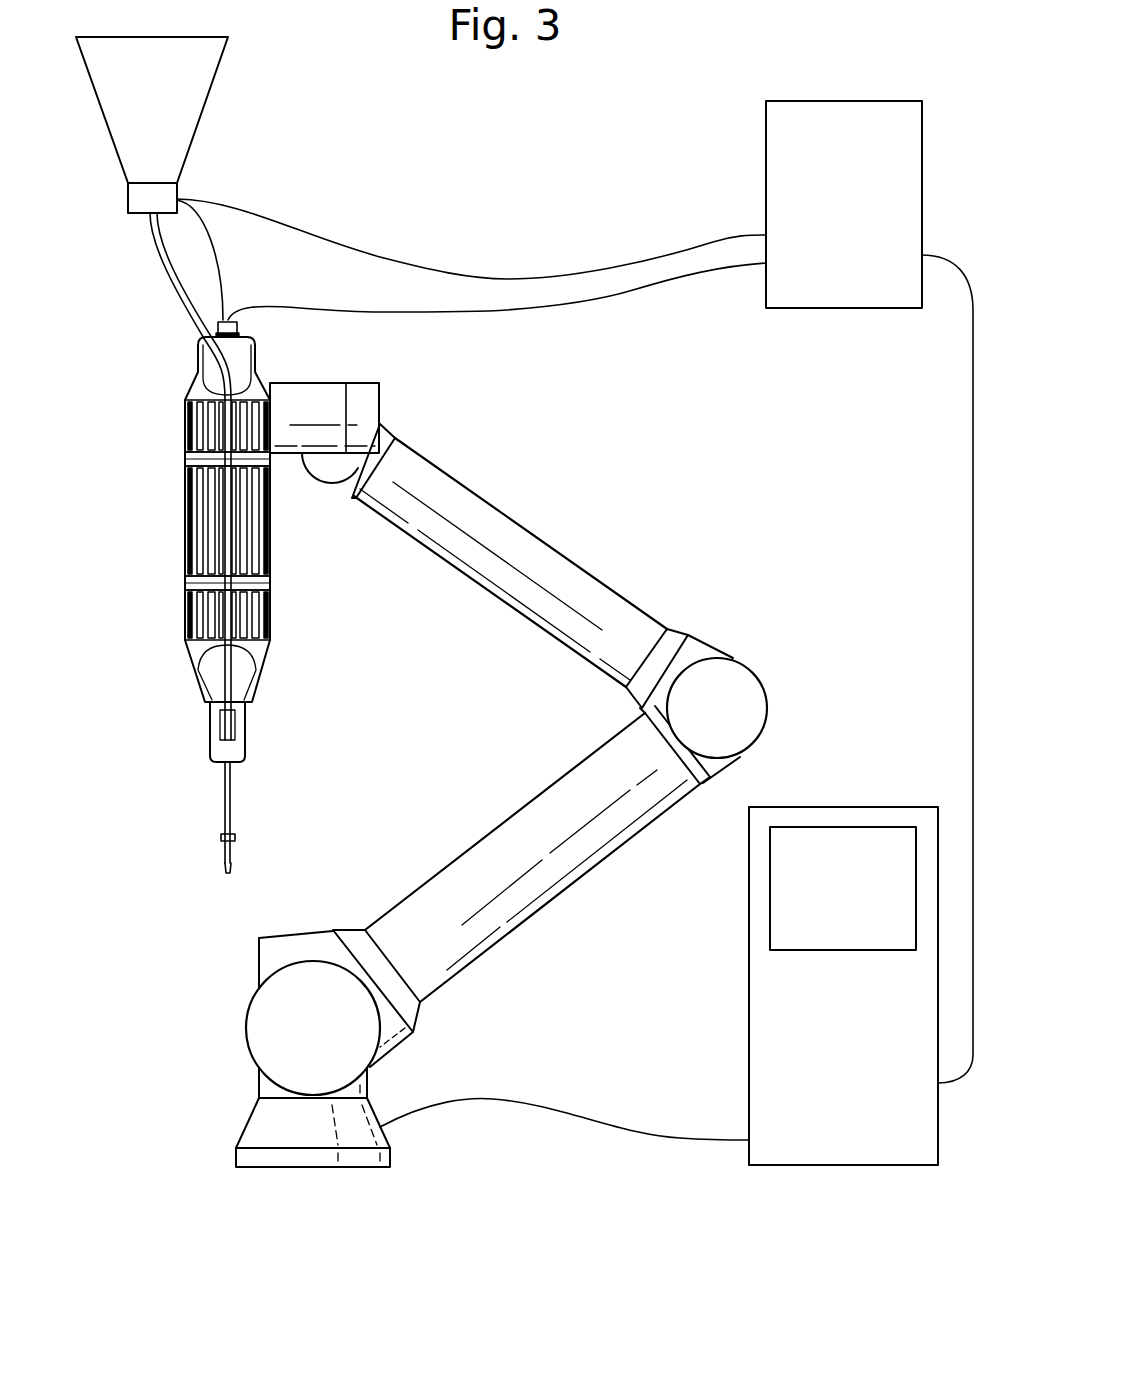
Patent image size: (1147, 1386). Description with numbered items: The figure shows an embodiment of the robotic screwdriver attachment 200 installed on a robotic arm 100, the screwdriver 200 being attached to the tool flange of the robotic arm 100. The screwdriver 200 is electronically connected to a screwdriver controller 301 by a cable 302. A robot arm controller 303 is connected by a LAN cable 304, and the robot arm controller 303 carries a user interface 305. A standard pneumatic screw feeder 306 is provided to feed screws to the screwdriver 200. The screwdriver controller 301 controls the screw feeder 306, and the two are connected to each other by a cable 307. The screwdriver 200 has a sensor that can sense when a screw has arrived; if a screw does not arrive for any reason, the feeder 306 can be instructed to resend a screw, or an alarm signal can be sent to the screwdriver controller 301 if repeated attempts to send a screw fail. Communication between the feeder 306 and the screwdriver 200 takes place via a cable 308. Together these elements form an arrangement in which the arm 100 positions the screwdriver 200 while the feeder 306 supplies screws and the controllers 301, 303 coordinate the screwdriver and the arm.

The robotic arm 100 is at (133, 1190).
The robotic screwdriver attachment 200 is at (160, 476).
The screwdriver controller 301 is at (850, 100).
The cable 302 is at (627, 293).
The robot arm controller 303 is at (838, 1133).
The LAN cable 304 is at (973, 568).
The user interface 305 is at (837, 843).
The pneumatic screw feeder 306 is at (187, 127).
The cable 307 is at (608, 267).
The cable 308 is at (215, 250).